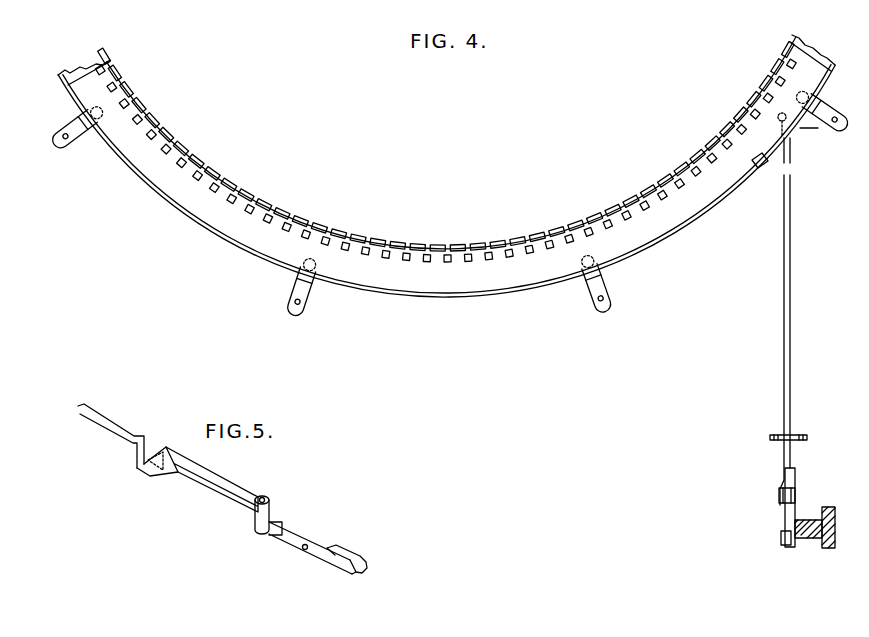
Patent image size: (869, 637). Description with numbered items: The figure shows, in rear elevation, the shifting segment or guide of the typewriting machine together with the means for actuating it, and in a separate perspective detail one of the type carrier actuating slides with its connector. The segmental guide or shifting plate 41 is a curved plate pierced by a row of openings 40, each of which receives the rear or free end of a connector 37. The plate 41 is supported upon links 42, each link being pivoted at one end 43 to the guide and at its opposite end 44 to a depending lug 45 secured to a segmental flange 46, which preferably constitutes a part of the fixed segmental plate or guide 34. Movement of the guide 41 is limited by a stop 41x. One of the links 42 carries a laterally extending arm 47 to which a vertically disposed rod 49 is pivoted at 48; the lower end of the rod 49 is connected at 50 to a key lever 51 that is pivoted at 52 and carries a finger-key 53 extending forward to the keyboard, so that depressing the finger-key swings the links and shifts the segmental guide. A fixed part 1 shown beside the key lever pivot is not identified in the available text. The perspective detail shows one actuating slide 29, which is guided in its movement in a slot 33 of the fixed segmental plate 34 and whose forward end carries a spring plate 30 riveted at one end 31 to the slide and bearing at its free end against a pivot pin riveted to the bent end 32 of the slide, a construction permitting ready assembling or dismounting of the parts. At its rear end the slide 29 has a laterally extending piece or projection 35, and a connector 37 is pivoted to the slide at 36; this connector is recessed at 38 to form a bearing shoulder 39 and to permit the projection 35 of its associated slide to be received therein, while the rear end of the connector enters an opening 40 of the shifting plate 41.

In FIG. 4, the wall 1 is at (835, 526).
In FIG. 5, the actuating slide 29 is at (287, 538).
In FIG. 5, the spring plate 30 is at (334, 566).
In FIG. 5, the riveted end of spring plate 31 is at (308, 545).
In FIG. 5, the bent end of slide 32 is at (334, 555).
In FIG. 4, the slot 33 is at (326, 232).
In FIG. 4, the fixed segmental plate 34 is at (88, 64).
In FIG. 5, the laterally extending piece 35 is at (153, 476).
In FIG. 5, the connector pivot 36 is at (269, 498).
In FIG. 5, the connector 37 is at (204, 475).
In FIG. 5, the recess 38 is at (150, 448).
In FIG. 5, the bearing shoulder 39 is at (134, 456).
In FIG. 4, the opening 40 is at (394, 250).
In FIG. 4, the segmental guide 41 is at (443, 287).
In FIG. 4, the stop 41x is at (759, 163).
In FIG. 4, the link 42 is at (80, 125).
In FIG. 4, the link pivot to guide 43 is at (101, 116).
In FIG. 4, the link pivot to lug 44 is at (67, 140).
In FIG. 4, the depending lug 45 is at (88, 133).
In FIG. 4, the segmental flange 46 is at (59, 81).
In FIG. 4, the laterally extending arm 47 is at (812, 120).
In FIG. 4, the rod pivot 48 is at (779, 121).
In FIG. 4, the vertically disposed rod 49 is at (790, 205).
In FIG. 4, the rod connection 50 is at (780, 500).
In FIG. 4, the key lever 51 is at (796, 518).
In FIG. 4, the key lever pivot 52 is at (781, 536).
In FIG. 4, the finger-key 53 is at (808, 437).